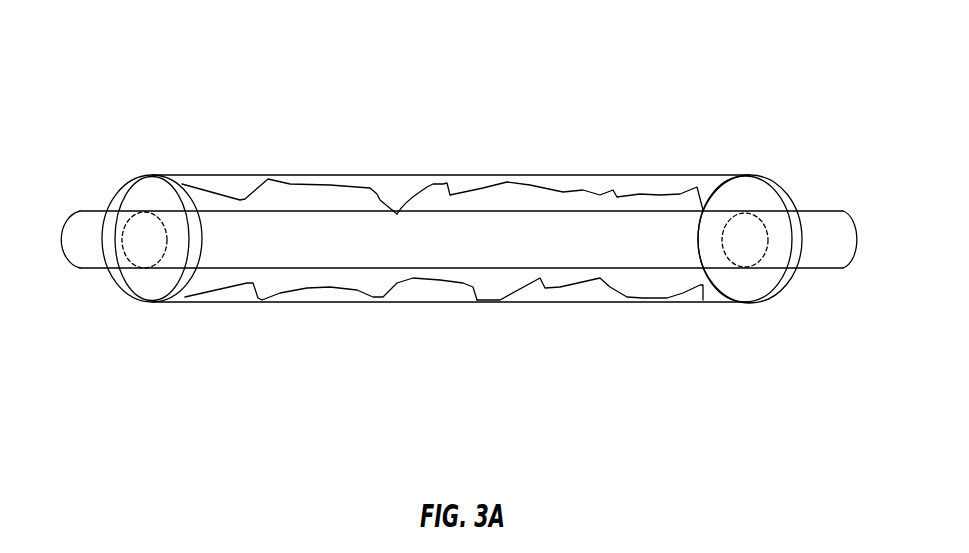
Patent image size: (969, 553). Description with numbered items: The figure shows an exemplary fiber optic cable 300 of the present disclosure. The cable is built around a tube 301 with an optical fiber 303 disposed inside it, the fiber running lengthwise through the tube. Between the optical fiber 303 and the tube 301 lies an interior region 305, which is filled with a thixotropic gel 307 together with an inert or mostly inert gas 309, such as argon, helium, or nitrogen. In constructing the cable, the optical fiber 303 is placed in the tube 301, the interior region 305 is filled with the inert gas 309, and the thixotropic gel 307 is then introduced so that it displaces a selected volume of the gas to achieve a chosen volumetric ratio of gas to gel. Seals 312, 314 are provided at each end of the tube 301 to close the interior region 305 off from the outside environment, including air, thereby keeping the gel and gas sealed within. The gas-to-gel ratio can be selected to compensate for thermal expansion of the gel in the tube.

The fiber optic cable 300 is at (153, 52).
The tube 301 is at (472, 175).
The optical fiber 303 is at (562, 268).
The interior region 305 is at (322, 292).
The thixotropic gel 307 is at (233, 185).
The inert gas 309 is at (332, 195).
The seal 312 is at (150, 300).
The seal 314 is at (753, 300).